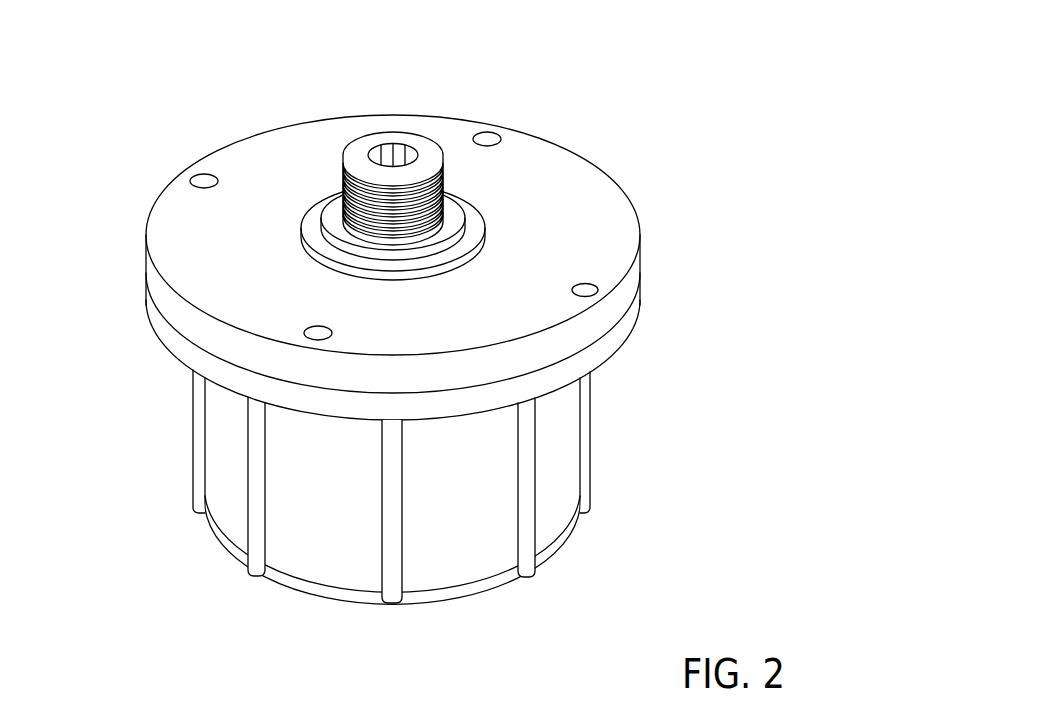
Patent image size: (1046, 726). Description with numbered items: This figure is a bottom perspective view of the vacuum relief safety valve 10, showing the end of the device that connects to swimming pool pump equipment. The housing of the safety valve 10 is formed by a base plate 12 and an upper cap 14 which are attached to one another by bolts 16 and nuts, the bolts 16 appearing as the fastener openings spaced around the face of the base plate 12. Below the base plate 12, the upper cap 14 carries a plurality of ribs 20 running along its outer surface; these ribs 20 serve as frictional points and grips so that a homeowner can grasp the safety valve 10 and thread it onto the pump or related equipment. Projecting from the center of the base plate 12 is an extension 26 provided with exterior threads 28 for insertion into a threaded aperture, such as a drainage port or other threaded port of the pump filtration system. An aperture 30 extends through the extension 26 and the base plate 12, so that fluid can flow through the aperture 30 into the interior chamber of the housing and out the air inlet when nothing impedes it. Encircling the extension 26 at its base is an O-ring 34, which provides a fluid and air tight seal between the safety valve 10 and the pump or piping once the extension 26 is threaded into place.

The vacuum relief safety valve 10 is at (402, 364).
The base plate 12 is at (172, 238).
The upper cap 14 is at (289, 616).
The bolts 16 is at (202, 178).
The ribs 20 is at (392, 580).
The extension 26 is at (365, 143).
The exterior threads 28 is at (348, 187).
The aperture 30 is at (397, 148).
The O-ring 34 is at (465, 202).